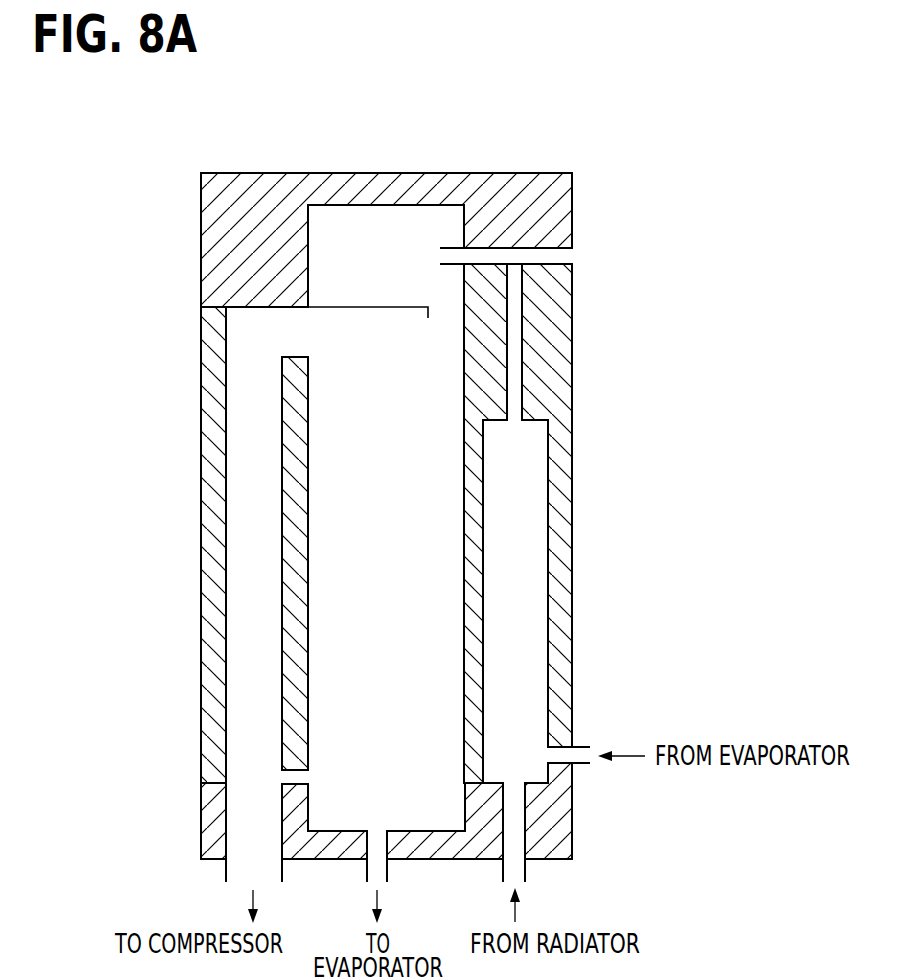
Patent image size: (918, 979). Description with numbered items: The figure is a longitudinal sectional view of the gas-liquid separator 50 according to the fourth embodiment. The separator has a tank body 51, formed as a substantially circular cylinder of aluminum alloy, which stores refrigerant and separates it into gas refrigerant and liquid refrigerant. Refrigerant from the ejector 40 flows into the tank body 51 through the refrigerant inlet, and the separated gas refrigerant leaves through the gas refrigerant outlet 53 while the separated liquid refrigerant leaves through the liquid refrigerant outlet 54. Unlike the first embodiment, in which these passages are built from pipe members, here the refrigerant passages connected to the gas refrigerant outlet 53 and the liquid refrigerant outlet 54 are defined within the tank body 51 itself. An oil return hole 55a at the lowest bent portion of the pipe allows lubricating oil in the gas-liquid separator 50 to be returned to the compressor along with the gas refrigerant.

The gas-liquid separator 50 is at (270, 168).
The tank body 51 is at (467, 565).
The ejector 40 is at (513, 638).
The gas refrigerant outlet 53 is at (247, 826).
The oil return hole 55a is at (305, 775).
The liquid refrigerant outlet 54 is at (377, 862).